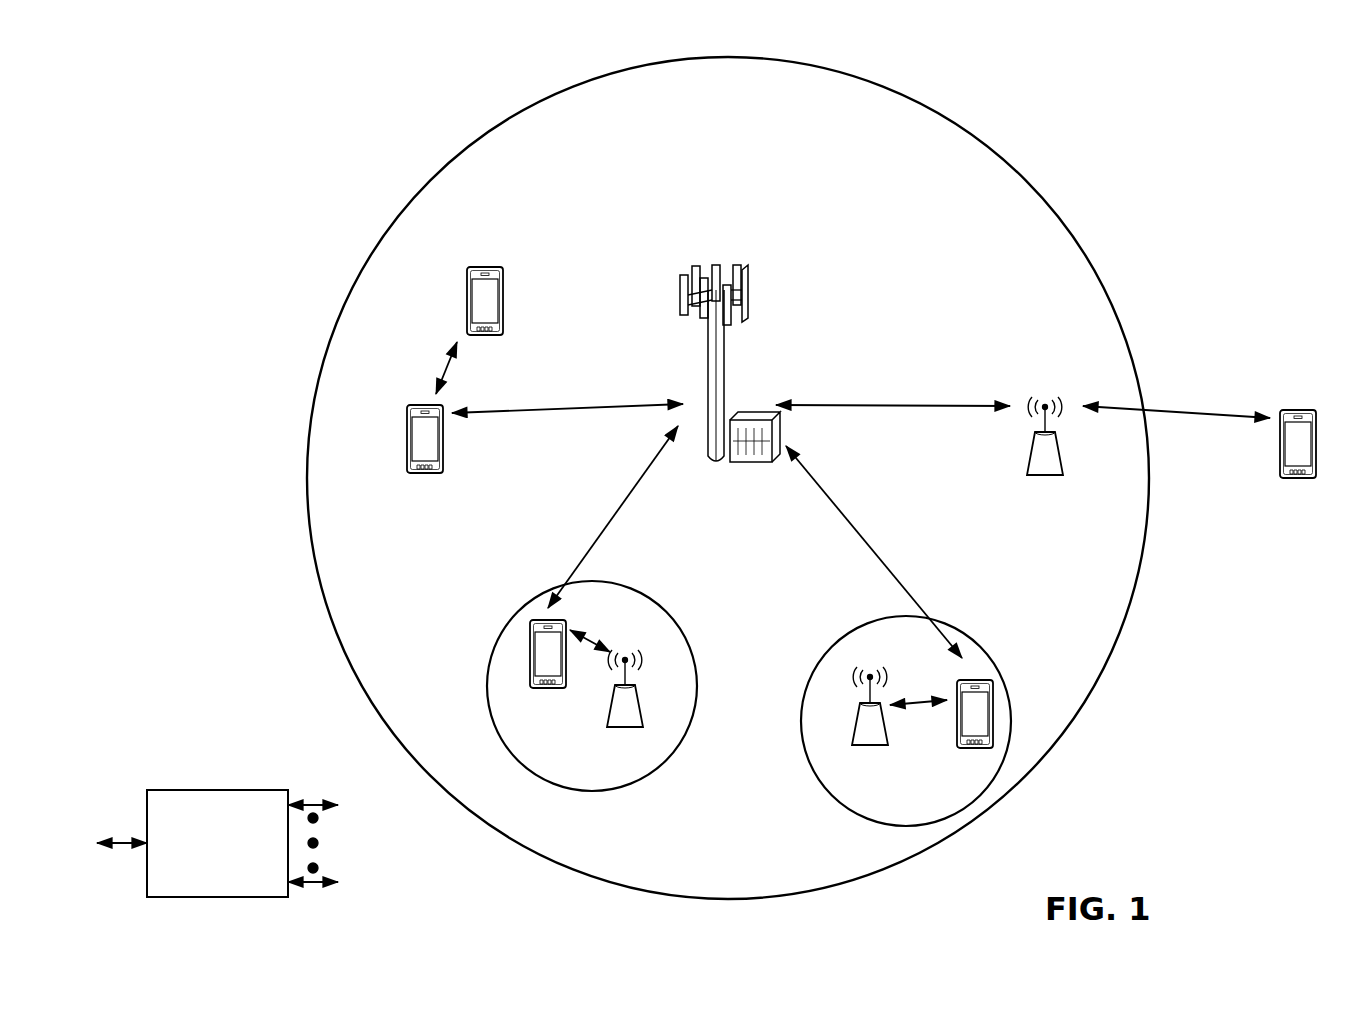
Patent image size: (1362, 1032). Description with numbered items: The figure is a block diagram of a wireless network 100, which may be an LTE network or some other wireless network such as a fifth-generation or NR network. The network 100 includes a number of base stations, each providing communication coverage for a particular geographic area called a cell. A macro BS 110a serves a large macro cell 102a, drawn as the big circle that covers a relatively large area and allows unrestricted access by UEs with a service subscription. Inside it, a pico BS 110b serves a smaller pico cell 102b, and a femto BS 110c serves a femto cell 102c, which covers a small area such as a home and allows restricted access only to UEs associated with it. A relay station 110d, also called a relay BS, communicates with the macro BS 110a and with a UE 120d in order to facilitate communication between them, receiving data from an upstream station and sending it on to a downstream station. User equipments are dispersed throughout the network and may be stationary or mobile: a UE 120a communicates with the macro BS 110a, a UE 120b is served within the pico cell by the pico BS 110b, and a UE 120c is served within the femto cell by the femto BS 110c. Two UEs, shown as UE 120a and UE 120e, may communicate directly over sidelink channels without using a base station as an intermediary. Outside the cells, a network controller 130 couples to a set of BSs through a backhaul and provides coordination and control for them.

The wireless network 100 is at (198, 50).
The macro cell 102a is at (1010, 160).
The pico cell 102b is at (681, 626).
The femto cell 102c is at (843, 637).
The macro BS 110a is at (740, 256).
The pico BS 110b is at (645, 716).
The femto BS 110c is at (853, 733).
The relay station 110d is at (1046, 396).
The UE 120a is at (407, 432).
The UE 120b is at (533, 688).
The UE 120c is at (957, 749).
The UE 120d is at (1310, 410).
The UE 120e is at (467, 285).
The network controller 130 is at (216, 789).